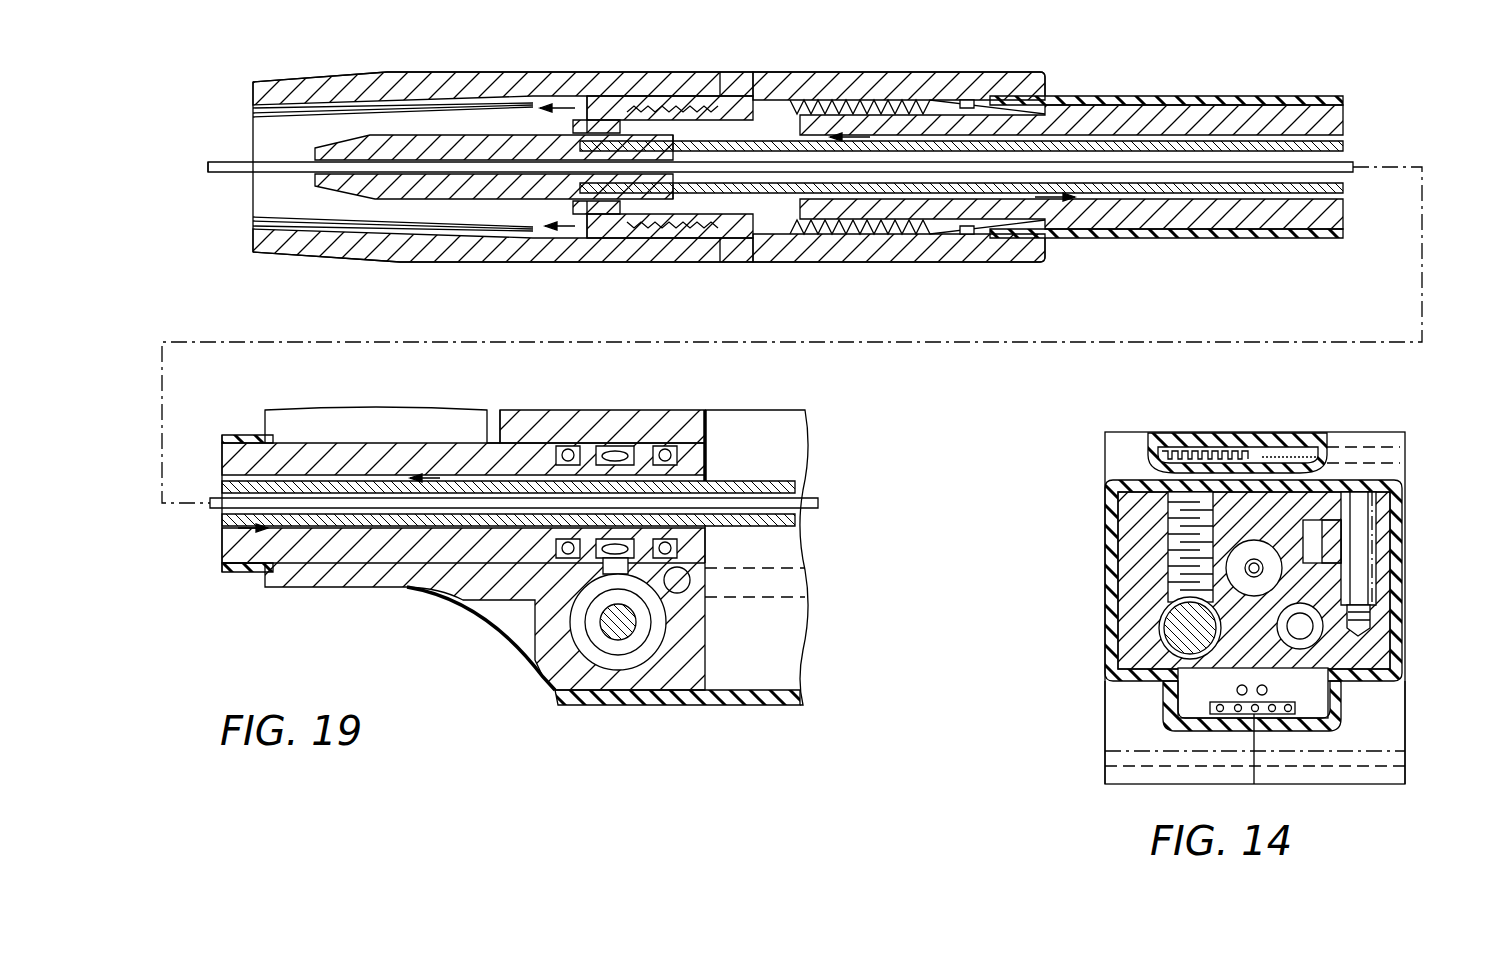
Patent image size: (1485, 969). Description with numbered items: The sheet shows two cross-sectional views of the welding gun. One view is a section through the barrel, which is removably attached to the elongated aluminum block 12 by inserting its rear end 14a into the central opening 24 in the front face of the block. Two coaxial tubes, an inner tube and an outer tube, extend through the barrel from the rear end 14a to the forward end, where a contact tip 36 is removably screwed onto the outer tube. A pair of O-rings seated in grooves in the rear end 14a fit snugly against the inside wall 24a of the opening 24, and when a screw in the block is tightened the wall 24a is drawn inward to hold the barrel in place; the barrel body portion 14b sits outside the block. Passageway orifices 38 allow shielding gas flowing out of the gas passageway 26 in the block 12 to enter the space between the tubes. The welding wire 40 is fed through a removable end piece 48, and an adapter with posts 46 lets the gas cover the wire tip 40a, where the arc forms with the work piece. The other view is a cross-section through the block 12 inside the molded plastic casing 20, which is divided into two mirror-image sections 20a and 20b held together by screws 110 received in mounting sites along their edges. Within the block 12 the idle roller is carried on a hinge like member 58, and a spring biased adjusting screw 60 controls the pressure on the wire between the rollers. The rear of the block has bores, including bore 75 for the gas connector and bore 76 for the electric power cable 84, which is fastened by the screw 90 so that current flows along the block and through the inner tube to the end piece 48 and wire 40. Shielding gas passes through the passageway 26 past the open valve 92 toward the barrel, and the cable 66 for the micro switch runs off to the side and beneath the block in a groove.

In FIG. 19, the block 12 is at (547, 677).
In FIG. 14, the block 12 is at (1373, 646).
In FIG. 19, the rear end of barrel 14a is at (695, 464).
In FIG. 19, the threaded connector body 14b is at (805, 210).
In FIG. 14, the casing 20 is at (1102, 512).
In FIG. 14, the casing section 20a is at (1105, 723).
In FIG. 14, the casing section 20b is at (1405, 729).
In FIG. 19, the central opening 24 is at (318, 556).
In FIG. 19, the inside wall of opening 24a is at (512, 455).
In FIG. 19, the passageway 26 is at (802, 579).
In FIG. 19, the contact tip 36 is at (322, 70).
In FIG. 19, the passageway orifices 38 is at (615, 450).
In FIG. 14, the wire 40 is at (1254, 562).
In FIG. 19, the tip of wire 40a is at (212, 160).
In FIG. 19, the posts 46 is at (612, 118).
In FIG. 19, the end piece 48 is at (452, 135).
In FIG. 14, the hinge like member 58 is at (1390, 550).
In FIG. 14, the spring biased adjusting screw 60 is at (1366, 510).
In FIG. 14, the cable 66 is at (1238, 690).
In FIG. 14, the bore 75 is at (1293, 645).
In FIG. 14, the bore 76 is at (1162, 608).
In FIG. 14, the power cable 84 is at (1178, 636).
In FIG. 14, the screw 90 is at (1170, 550).
In FIG. 19, the valve 92 is at (648, 656).
In FIG. 14, the screws 110 is at (1293, 450).